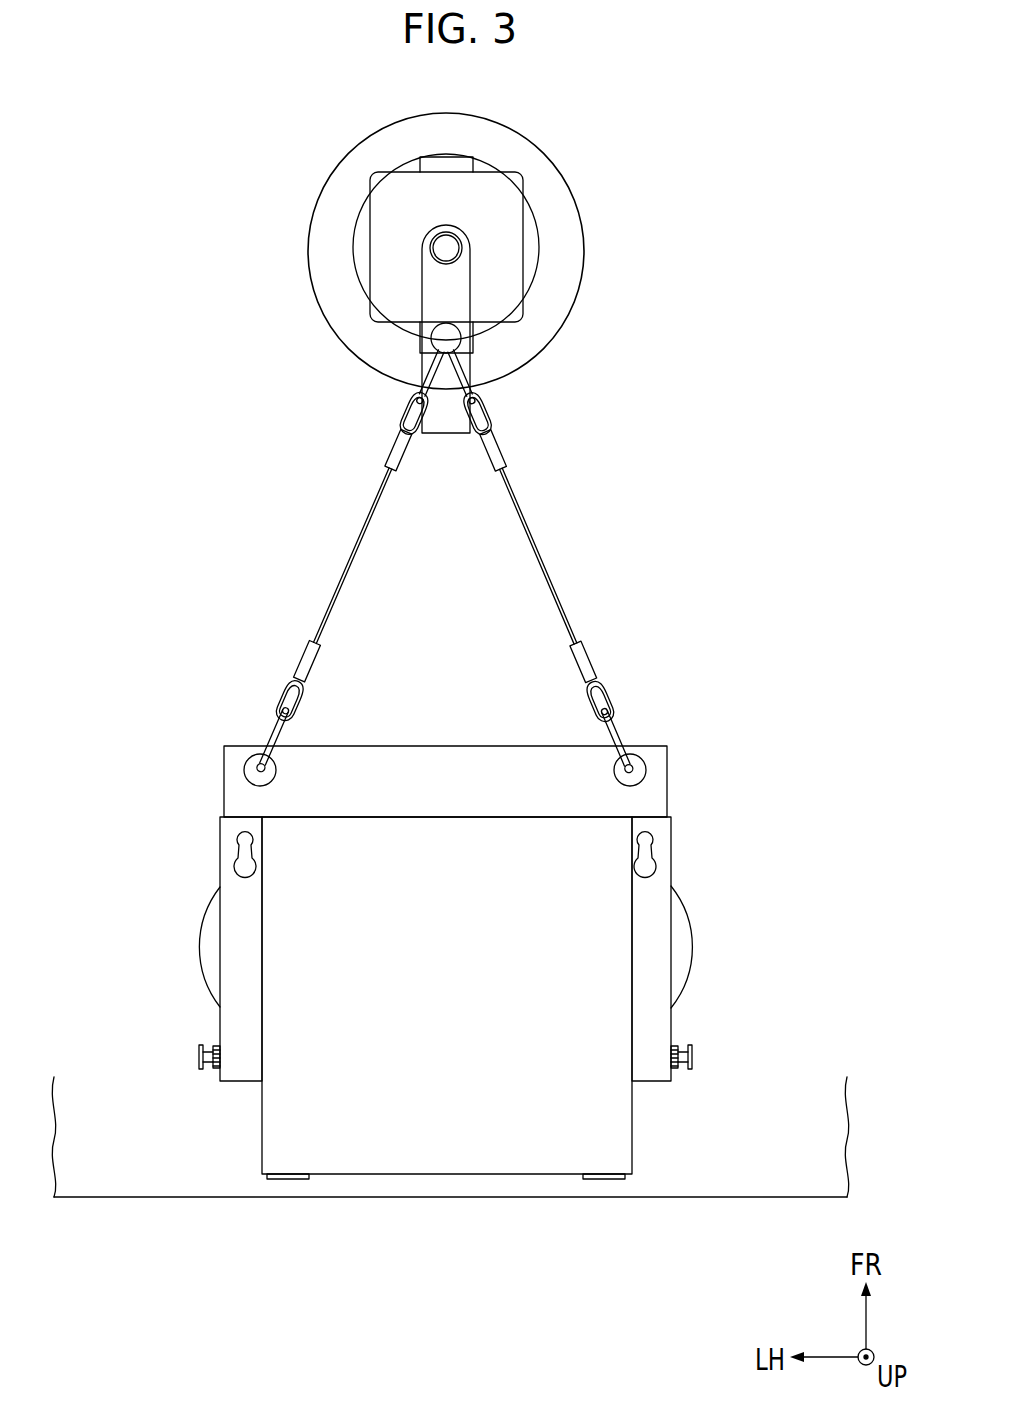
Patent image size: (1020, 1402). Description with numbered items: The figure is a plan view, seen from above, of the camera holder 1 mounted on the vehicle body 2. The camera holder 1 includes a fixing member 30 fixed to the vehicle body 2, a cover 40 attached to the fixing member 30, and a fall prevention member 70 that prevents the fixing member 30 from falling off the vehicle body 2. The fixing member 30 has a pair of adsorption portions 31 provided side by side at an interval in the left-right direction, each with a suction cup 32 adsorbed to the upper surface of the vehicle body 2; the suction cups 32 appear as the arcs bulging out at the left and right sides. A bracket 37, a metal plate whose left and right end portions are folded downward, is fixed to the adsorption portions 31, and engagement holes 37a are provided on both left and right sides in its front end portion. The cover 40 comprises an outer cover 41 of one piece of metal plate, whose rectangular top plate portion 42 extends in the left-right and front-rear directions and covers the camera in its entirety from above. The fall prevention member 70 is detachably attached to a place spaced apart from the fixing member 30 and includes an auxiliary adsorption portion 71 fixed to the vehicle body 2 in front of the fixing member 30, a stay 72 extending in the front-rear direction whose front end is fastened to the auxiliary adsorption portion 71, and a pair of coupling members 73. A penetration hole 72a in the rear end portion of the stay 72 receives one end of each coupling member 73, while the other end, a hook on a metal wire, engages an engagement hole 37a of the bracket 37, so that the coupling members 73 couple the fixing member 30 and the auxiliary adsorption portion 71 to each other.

The camera holder 1 is at (632, 168).
The vehicle body 2 is at (90, 1202).
The fixing member 30 is at (682, 778).
The adsorption portion 31 is at (432, 934).
The suction cup 32 is at (200, 923).
The bracket 37 is at (658, 801).
The engagement hole 37a is at (250, 774).
The cover 40 is at (369, 949).
The outer cover 41 is at (216, 856).
The top plate portion 42 is at (298, 975).
The fall prevention member 70 is at (548, 425).
The auxiliary adsorption portion 71 is at (332, 292).
The stay 72 is at (427, 298).
The penetration hole 72a is at (443, 345).
The coupling member 73 is at (363, 543).